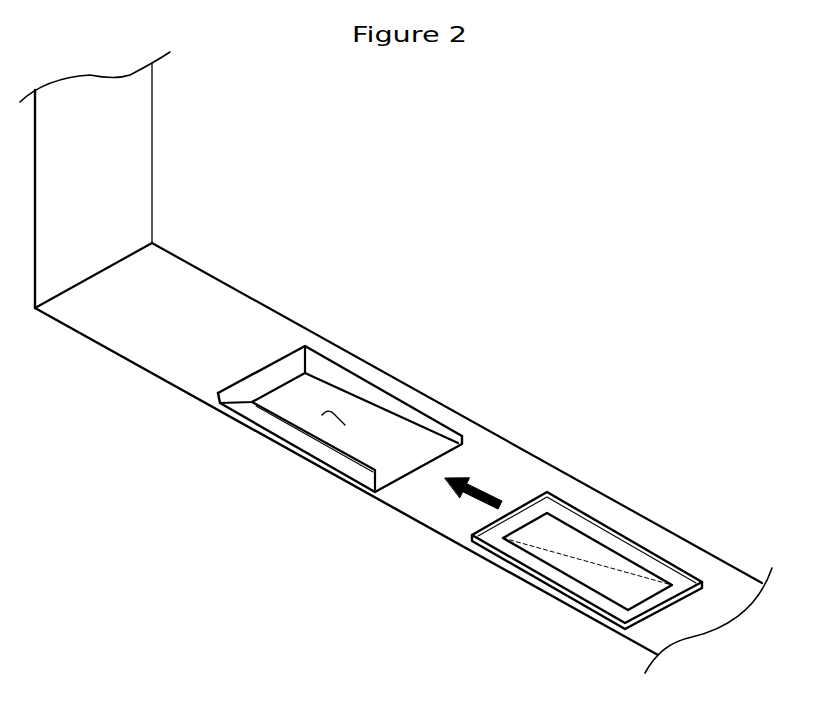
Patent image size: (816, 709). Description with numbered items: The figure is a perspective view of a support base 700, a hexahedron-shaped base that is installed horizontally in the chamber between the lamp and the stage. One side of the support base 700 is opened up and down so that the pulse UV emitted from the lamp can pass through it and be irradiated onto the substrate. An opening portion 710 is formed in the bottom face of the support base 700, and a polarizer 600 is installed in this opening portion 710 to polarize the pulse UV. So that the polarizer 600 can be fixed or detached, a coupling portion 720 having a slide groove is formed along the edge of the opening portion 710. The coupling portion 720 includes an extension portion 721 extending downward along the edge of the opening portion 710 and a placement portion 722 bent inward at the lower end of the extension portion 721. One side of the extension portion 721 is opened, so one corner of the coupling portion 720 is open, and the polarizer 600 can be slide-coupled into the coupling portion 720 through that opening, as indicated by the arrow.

The support base 700 is at (130, 327).
The coupling portion 720 is at (373, 353).
The extension portion 721 is at (385, 393).
The placement portion 722 is at (323, 378).
The opening portion 710 is at (333, 417).
The polarizer 600 is at (598, 537).